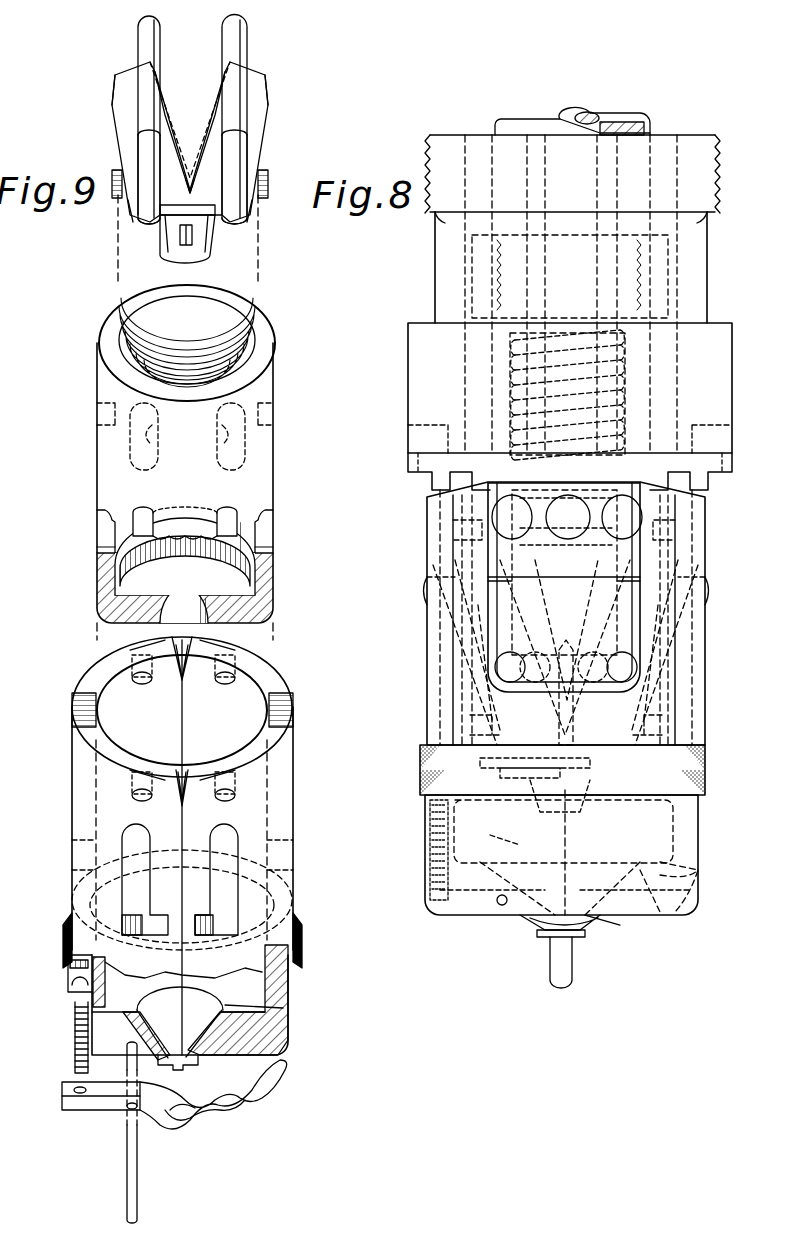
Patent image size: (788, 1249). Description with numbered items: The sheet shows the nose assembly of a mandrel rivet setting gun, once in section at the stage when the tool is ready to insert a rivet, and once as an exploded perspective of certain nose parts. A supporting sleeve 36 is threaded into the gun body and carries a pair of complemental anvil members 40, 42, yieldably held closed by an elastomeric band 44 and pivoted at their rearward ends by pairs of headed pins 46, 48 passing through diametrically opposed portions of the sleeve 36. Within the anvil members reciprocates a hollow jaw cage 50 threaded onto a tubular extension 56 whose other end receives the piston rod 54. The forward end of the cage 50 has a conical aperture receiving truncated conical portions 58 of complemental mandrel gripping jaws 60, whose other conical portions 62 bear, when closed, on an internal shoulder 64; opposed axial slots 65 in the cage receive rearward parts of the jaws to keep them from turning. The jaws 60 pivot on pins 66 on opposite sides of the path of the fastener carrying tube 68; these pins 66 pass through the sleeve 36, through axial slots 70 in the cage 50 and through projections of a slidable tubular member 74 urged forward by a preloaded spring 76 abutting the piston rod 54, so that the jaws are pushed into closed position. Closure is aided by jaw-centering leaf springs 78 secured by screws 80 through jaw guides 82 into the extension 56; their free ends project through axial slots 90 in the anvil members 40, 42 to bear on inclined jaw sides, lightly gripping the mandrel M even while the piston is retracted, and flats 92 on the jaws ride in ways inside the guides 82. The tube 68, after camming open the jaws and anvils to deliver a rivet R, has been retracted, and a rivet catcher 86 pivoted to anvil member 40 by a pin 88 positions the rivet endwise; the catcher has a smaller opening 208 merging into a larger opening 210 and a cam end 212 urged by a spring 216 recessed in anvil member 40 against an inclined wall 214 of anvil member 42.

In FIG. 8, the supporting sleeve 36 is at (707, 258).
In FIG. 9, the anvil member 40 is at (78, 990).
In FIG. 8, the anvil member 40 is at (428, 838).
In FIG. 9, the anvil member 42 is at (288, 978).
In FIG. 8, the anvil member 42 is at (698, 892).
In FIG. 9, the elastomeric band 44 is at (298, 950).
In FIG. 8, the elastomeric band 44 is at (705, 778).
In FIG. 8, the headed pins 46 is at (490, 522).
In FIG. 8, the headed pins 48 is at (640, 522).
In FIG. 9, the jaw cage 50 is at (273, 470).
In FIG. 8, the jaw cage 50 is at (522, 832).
In FIG. 8, the piston rod 54 is at (650, 162).
In FIG. 8, the tubular extension 56 is at (668, 305).
In FIG. 9, the truncated conical portions 58 is at (162, 250).
In FIG. 8, the truncated conical portions 58 is at (590, 818).
In FIG. 9, the mandrel gripping jaws 60 is at (218, 112).
In FIG. 8, the mandrel gripping jaws 60 is at (475, 728).
In FIG. 9, the conical portions 62 is at (125, 205).
In FIG. 8, the conical portions 62 is at (470, 765).
In FIG. 9, the internal shoulder 64 is at (250, 537).
In FIG. 9, the axial slots 65 is at (273, 546).
In FIG. 9, the pins 66 is at (222, 45).
In FIG. 8, the pins 66 is at (495, 683).
In FIG. 8, the fastener carrying tube 68 is at (598, 113).
In FIG. 9, the axial slots 70 is at (217, 423).
In FIG. 8, the tubular member 74 is at (640, 430).
In FIG. 8, the spring 76 is at (625, 368).
In FIG. 8, the jaw-centering leaf springs 78 is at (450, 640).
In FIG. 8, the screws 80 is at (410, 470).
In FIG. 8, the jaw guides 82 is at (428, 586).
In FIG. 9, the rivet catcher 86 is at (88, 1108).
In FIG. 8, the rivet catcher 86 is at (612, 928).
In FIG. 9, the pin 88 is at (137, 1200).
In FIG. 8, the pin 88 is at (500, 906).
In FIG. 9, the axial slots 90 is at (96, 718).
In FIG. 9, the flats 92 is at (115, 100).
In FIG. 8, the flats 92 is at (445, 618).
In FIG. 9, the smaller opening 208 is at (212, 1115).
In FIG. 9, the larger opening 210 is at (180, 1115).
In FIG. 9, the cam end 212 is at (285, 1080).
In FIG. 9, the inclined wall 214 is at (288, 1040).
In FIG. 8, the inclined wall 214 is at (700, 868).
In FIG. 9, the spring 216 is at (75, 1060).
In FIG. 8, the spring 216 is at (440, 880).
In FIG. 8, the mandrel M is at (572, 850).
In FIG. 8, the rivet R is at (550, 965).